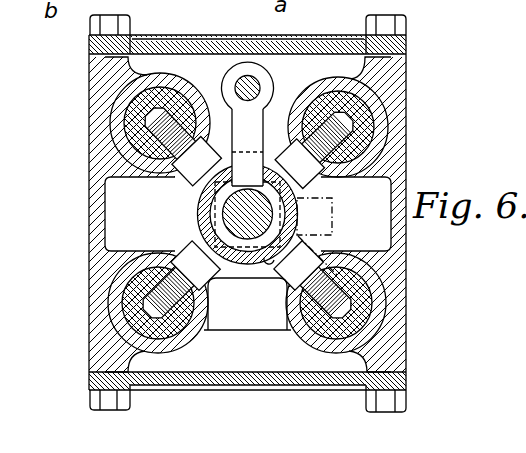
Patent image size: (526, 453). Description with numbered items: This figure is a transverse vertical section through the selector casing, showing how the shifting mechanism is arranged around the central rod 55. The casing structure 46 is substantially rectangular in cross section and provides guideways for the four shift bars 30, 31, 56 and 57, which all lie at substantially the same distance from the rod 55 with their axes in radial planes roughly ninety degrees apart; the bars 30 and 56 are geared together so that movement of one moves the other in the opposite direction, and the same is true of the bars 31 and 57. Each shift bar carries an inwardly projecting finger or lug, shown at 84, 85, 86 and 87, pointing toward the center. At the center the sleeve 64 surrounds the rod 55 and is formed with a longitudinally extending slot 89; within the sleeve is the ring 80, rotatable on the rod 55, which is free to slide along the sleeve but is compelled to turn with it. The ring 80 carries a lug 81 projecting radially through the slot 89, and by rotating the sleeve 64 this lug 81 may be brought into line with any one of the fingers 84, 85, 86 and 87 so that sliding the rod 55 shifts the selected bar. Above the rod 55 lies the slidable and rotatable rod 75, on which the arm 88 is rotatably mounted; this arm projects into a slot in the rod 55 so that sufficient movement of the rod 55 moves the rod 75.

The casing structure 46 is at (428, 152).
The shift bar 30 is at (135, 122).
The shift bar 57 is at (363, 115).
The shift bar 56 is at (133, 304).
The shift bar 31 is at (363, 298).
The finger 85 is at (183, 147).
The finger 86 is at (314, 150).
The finger 87 is at (181, 279).
The finger 84 is at (312, 279).
The sleeve 64 is at (244, 258).
The slot 89 is at (270, 257).
The ring 80 is at (217, 222).
The rod 55 is at (232, 208).
The lug 81 is at (317, 237).
The arm 88 is at (247, 147).
The rod 75 is at (250, 76).